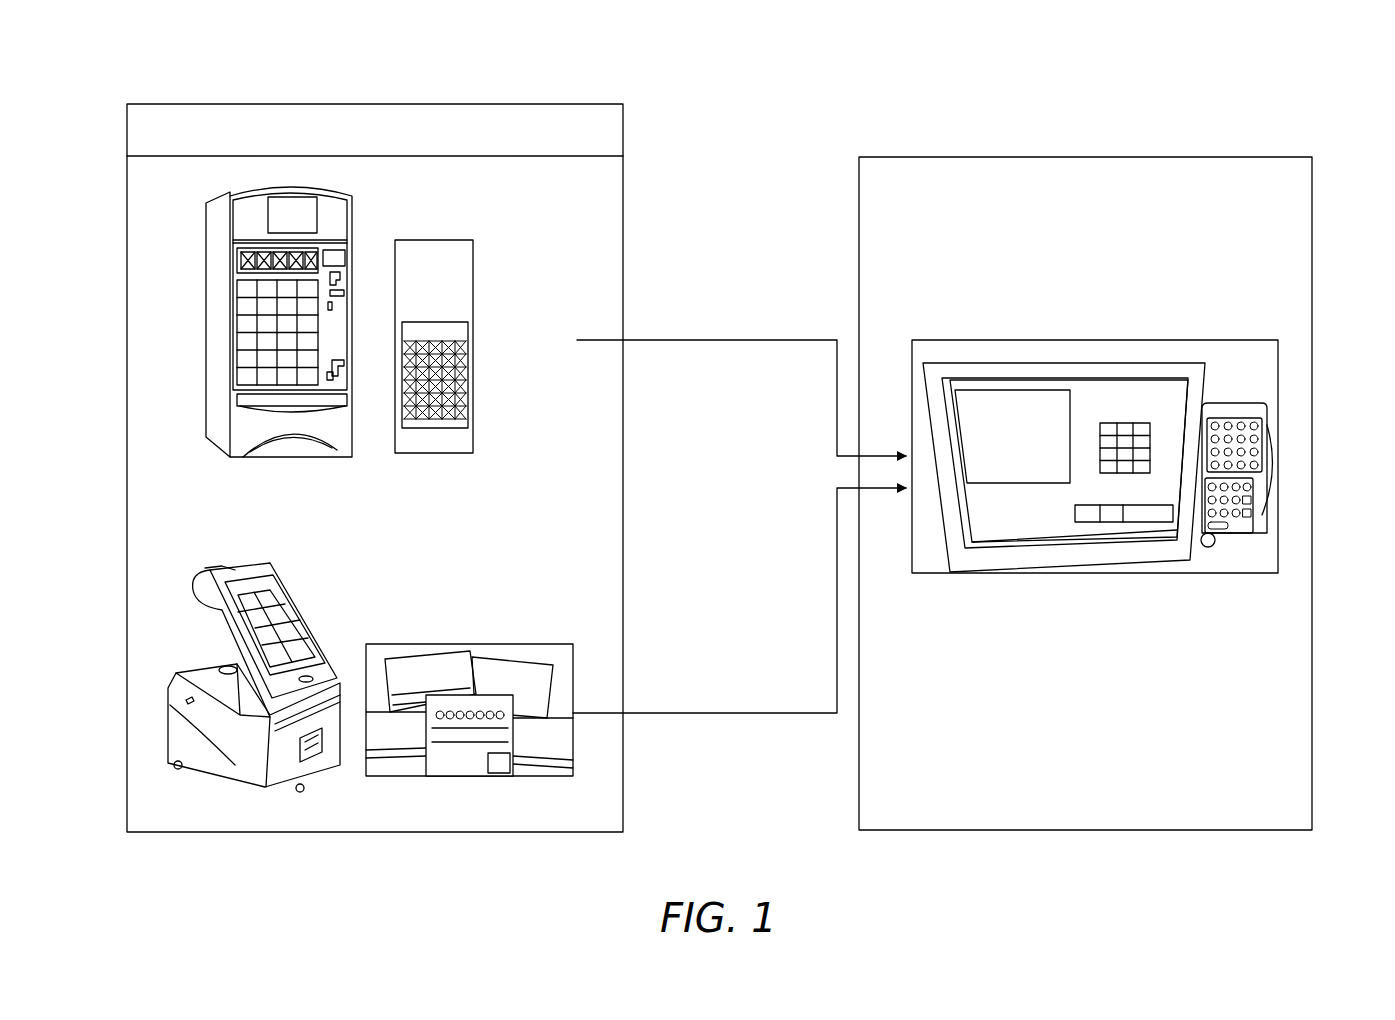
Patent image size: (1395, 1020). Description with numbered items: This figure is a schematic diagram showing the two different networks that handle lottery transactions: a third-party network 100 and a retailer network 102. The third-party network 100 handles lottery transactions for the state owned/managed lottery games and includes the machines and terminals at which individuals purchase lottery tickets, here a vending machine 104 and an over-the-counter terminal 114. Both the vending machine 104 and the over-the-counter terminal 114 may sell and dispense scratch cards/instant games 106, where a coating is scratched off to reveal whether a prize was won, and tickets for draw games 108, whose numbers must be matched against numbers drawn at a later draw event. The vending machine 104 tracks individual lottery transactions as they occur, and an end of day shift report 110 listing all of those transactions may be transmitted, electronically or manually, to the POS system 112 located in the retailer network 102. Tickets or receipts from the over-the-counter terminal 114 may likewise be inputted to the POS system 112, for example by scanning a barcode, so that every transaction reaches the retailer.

The third-party network 100 is at (148, 56).
The retailer network 102 is at (1265, 125).
The vending machine 104 is at (207, 279).
The scratch cards/instant games 106 is at (474, 275).
The tickets for draw games 108 is at (475, 757).
The end of day shift report 110 is at (737, 296).
The POS system 112 is at (1267, 373).
The over-the-counter terminal 114 is at (250, 757).